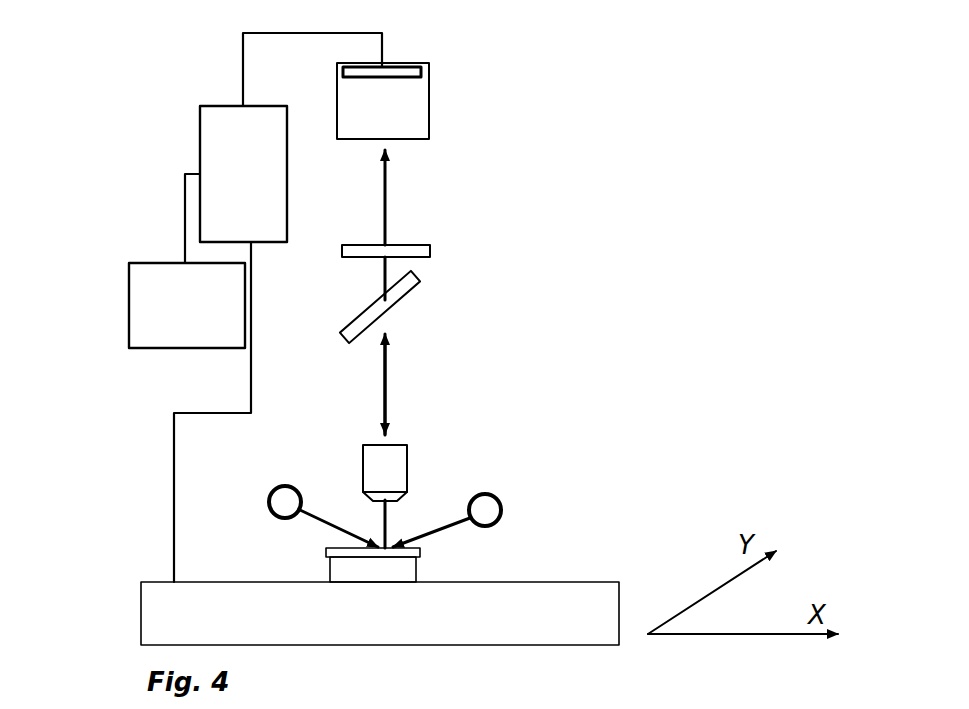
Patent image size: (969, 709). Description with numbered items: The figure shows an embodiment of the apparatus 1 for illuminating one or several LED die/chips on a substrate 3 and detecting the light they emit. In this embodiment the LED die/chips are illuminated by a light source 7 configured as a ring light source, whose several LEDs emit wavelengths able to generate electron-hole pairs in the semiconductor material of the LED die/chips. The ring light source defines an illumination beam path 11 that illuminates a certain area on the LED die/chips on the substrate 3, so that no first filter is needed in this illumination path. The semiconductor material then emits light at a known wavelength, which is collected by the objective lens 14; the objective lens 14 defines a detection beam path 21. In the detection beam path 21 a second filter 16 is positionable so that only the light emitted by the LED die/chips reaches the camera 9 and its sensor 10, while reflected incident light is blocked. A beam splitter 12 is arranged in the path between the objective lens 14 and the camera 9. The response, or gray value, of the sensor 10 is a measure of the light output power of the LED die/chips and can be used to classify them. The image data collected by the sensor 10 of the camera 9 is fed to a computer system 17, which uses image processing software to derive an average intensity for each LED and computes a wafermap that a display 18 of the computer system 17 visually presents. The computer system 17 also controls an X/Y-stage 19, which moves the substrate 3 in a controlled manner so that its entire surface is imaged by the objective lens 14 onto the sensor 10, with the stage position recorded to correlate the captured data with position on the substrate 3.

The apparatus 1 is at (492, 272).
The substrate 3 is at (340, 560).
The light source 7 is at (496, 493).
The camera 9 is at (429, 125).
The sensor 10 is at (410, 72).
The illumination beam path 11 is at (333, 523).
The beam splitter 12 is at (365, 318).
The objective lens 14 is at (405, 462).
The second filter 16 is at (360, 243).
The computer system 17 is at (262, 188).
The display 18 is at (206, 317).
The X/Y-stage 19 is at (546, 623).
The detection beam path 21 is at (387, 205).